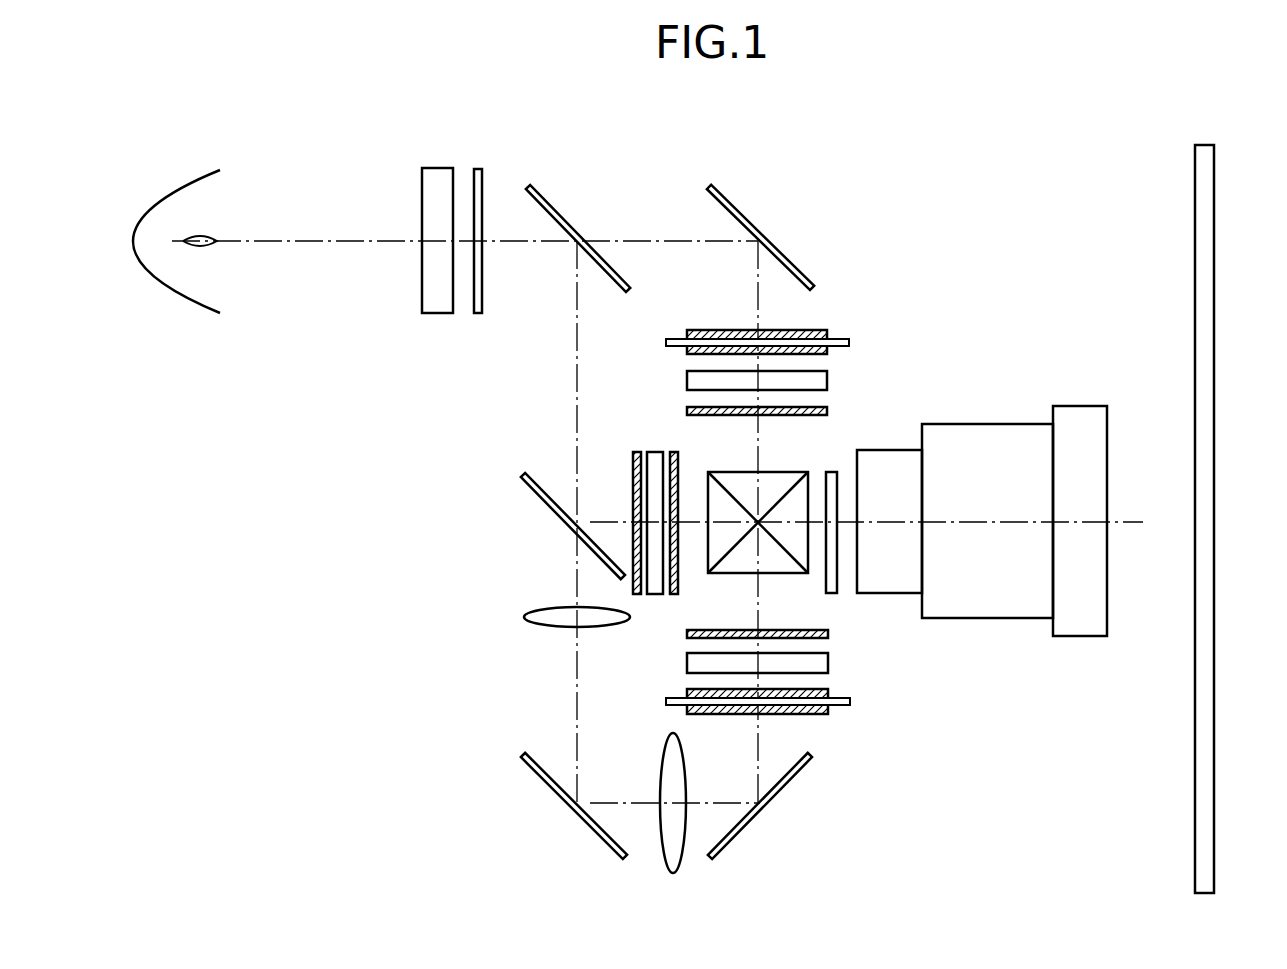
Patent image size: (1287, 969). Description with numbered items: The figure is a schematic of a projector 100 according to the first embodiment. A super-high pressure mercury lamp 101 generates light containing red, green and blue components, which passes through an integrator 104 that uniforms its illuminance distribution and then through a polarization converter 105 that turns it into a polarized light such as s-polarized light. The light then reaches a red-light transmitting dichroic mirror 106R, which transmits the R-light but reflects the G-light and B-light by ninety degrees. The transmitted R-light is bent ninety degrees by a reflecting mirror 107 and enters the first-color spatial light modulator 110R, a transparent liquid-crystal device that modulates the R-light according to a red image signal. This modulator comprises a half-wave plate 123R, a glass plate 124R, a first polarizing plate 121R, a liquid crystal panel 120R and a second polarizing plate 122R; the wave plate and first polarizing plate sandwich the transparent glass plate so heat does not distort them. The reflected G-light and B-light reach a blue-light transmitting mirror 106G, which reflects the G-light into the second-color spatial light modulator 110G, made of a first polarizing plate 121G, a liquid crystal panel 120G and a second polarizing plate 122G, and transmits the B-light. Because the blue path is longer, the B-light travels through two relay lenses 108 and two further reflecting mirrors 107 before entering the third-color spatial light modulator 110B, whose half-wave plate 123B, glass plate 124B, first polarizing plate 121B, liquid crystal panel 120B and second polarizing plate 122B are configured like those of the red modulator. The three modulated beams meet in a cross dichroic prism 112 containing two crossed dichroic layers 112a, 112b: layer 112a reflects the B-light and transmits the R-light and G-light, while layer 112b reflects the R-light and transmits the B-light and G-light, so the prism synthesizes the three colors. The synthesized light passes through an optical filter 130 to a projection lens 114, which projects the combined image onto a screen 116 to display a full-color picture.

The projector 100 is at (866, 158).
The super-high pressure mercury lamp 101 is at (163, 300).
The integrator 104 is at (437, 168).
The polarization converter 105 is at (478, 168).
The red-light transmitting dichroic mirror 106R is at (562, 213).
The blue-light transmitting mirror 106G is at (537, 498).
The reflecting mirror 107 is at (748, 217).
The relay lens 108 is at (524, 617).
The first-color spatial light modulator 110R is at (871, 324).
The second-color spatial light modulator 110G is at (480, 612).
The third-color spatial light modulator 110B is at (874, 731).
The cross dichroic prism 112 is at (752, 513).
The dichroic layer 112a is at (770, 500).
The dichroic layer 112b is at (727, 488).
The projection lens 114 is at (1083, 636).
The screen 116 is at (1203, 145).
The liquid crystal panel 120R is at (827, 382).
The first polarizing plate 121R is at (830, 354).
The second polarizing plate 122R is at (831, 389).
The λ/2 wave plate 123R is at (825, 330).
The glass plate 124R is at (842, 341).
The liquid crystal panel 120G is at (655, 594).
The first polarizing plate 121G is at (637, 594).
The second polarizing plate 122G is at (675, 594).
The liquid crystal panel 120B is at (830, 665).
The first polarizing plate 121B is at (830, 690).
The second polarizing plate 122B is at (830, 636).
The λ/2 wave plate 123B is at (830, 714).
The glass plate 124B is at (850, 705).
The optical filter 130 is at (833, 470).